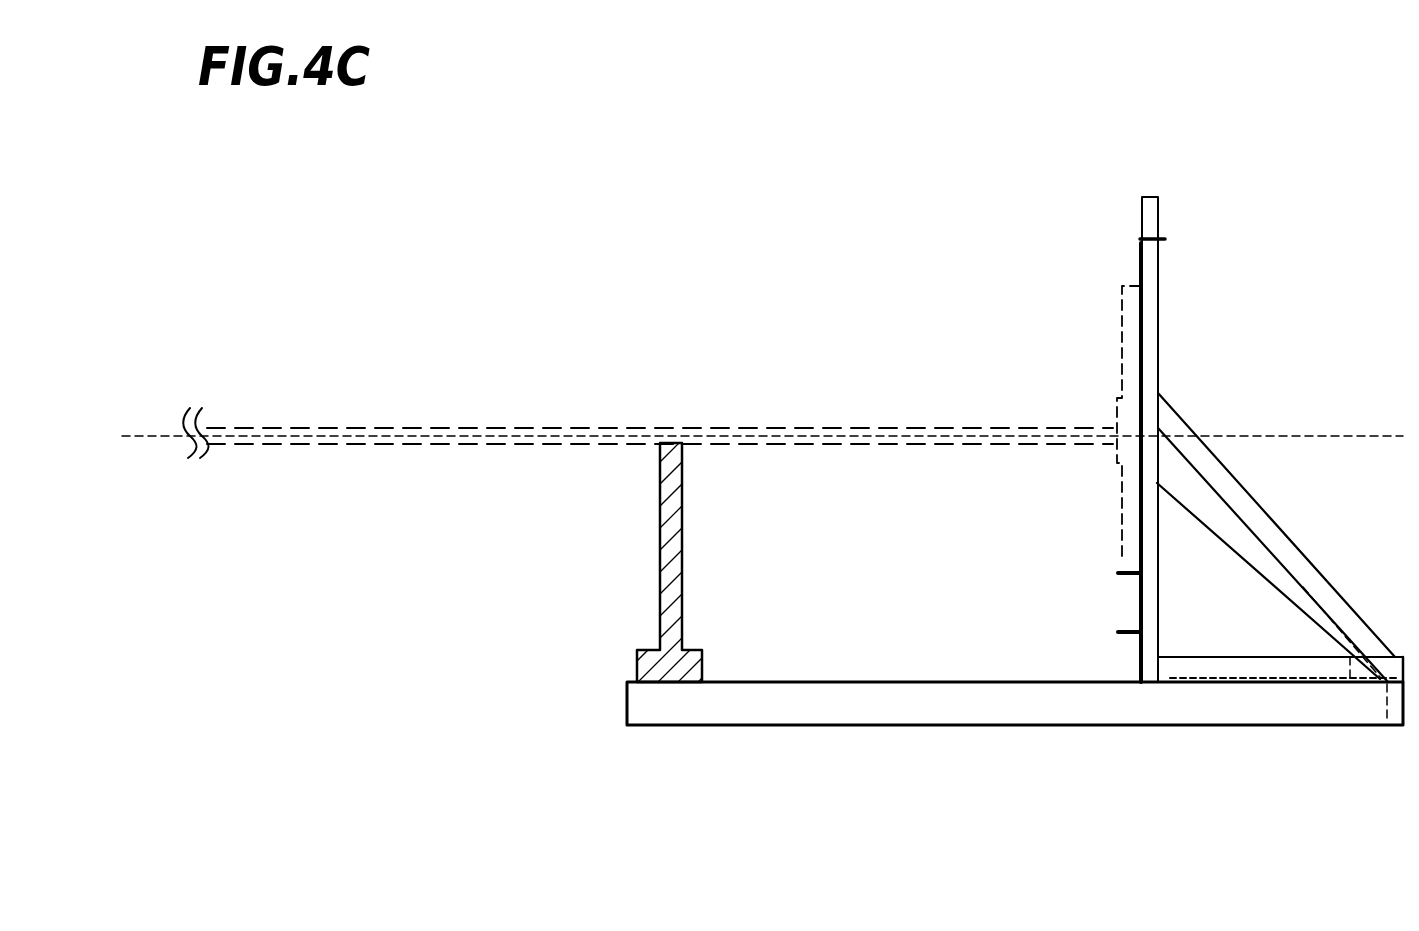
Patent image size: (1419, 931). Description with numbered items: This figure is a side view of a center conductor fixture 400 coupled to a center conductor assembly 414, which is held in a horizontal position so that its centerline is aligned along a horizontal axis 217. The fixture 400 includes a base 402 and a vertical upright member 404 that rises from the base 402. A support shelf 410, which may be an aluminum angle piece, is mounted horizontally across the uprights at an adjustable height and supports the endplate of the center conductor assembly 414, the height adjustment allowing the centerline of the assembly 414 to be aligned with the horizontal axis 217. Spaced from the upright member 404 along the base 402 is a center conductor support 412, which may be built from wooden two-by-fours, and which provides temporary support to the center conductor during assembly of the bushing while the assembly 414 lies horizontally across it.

The center conductor fixture 400 is at (681, 194).
The base 402 is at (777, 713).
The vertical upright member 404 is at (1155, 209).
The support shelf 410 is at (1118, 632).
The center conductor support 412 is at (682, 525).
The center conductor assembly 414 is at (826, 427).
The horizontal axis 217 is at (128, 437).